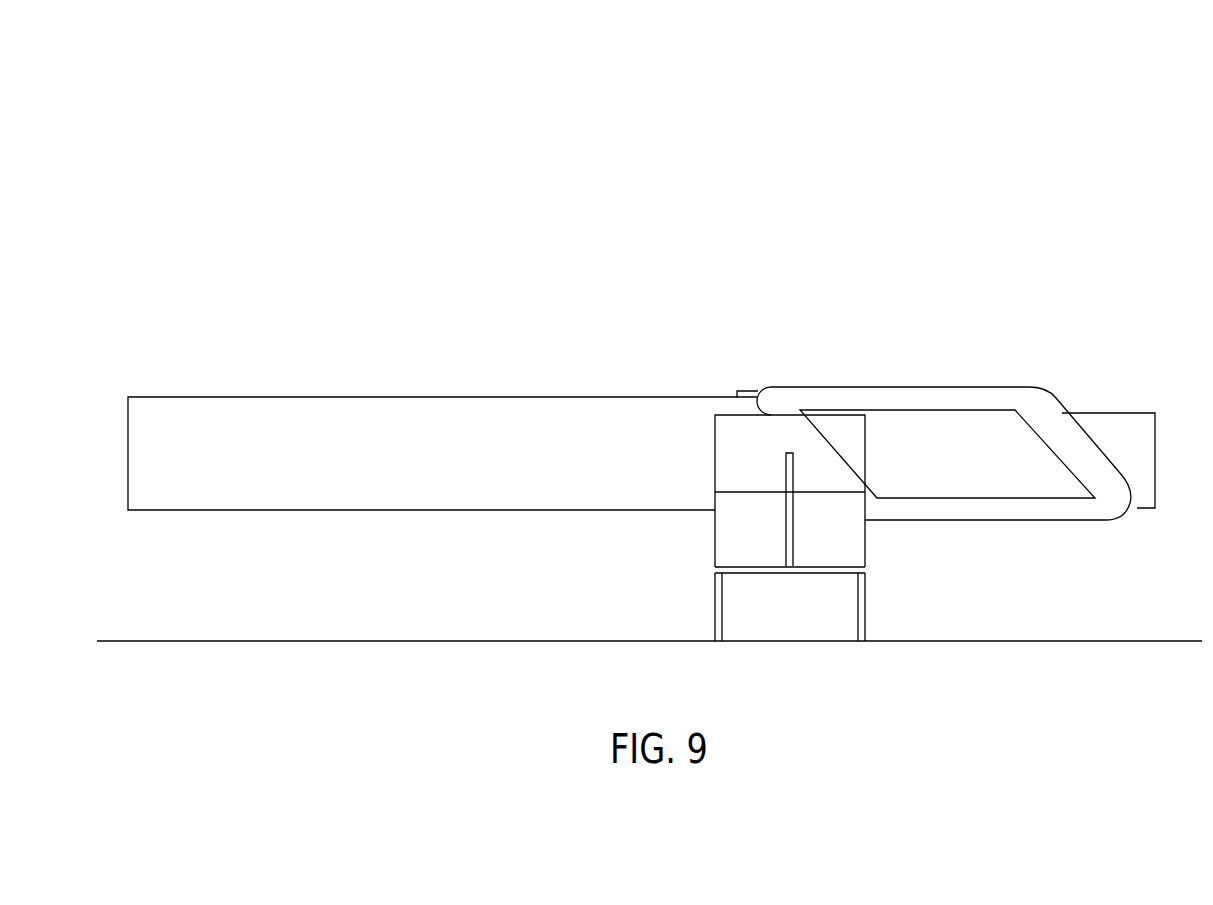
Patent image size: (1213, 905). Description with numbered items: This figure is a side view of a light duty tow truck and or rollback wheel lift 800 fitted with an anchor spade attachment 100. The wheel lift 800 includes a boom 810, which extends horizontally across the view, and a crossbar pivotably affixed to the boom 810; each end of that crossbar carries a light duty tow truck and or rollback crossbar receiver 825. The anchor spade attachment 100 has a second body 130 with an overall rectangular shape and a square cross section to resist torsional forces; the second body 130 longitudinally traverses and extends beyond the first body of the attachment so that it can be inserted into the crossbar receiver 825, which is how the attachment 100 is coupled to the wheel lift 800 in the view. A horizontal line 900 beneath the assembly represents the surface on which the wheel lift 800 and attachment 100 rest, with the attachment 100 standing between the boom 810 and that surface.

The light duty tow truck and or rollback wheel lift 800 is at (117, 89).
The boom 810 is at (313, 397).
The crossbar receiver 825 is at (993, 520).
The anchor spade attachment 100 is at (715, 563).
The second body 130 is at (765, 455).
The ground surface 900 is at (277, 641).